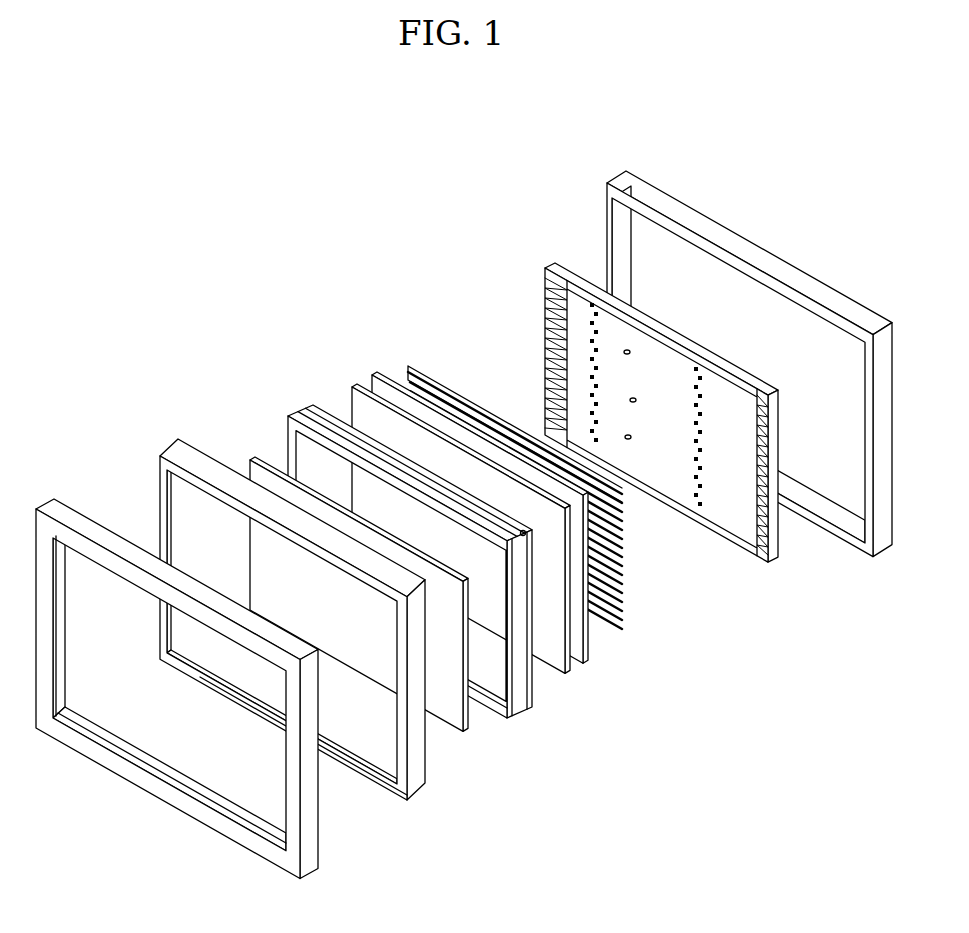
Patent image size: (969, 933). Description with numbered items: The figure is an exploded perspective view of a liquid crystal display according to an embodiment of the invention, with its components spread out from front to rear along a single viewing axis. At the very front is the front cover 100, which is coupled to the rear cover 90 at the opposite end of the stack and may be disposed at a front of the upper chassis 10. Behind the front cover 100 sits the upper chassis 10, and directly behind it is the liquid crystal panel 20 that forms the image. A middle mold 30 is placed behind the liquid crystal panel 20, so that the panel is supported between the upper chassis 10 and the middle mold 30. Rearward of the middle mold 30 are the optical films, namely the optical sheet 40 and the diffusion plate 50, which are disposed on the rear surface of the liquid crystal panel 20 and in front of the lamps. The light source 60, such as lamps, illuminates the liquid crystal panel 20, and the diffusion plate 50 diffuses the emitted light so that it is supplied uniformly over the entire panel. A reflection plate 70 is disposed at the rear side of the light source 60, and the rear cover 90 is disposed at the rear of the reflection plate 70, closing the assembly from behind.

The front cover 100 is at (51, 505).
The upper chassis 10 is at (176, 447).
The liquid crystal panel 20 is at (253, 460).
The middle mold 30 is at (302, 411).
The optical sheet 40 is at (352, 386).
The diffusion plate 50 is at (372, 376).
The light source 60 is at (409, 372).
The reflection plate 70 is at (563, 268).
The rear cover 90 is at (620, 183).